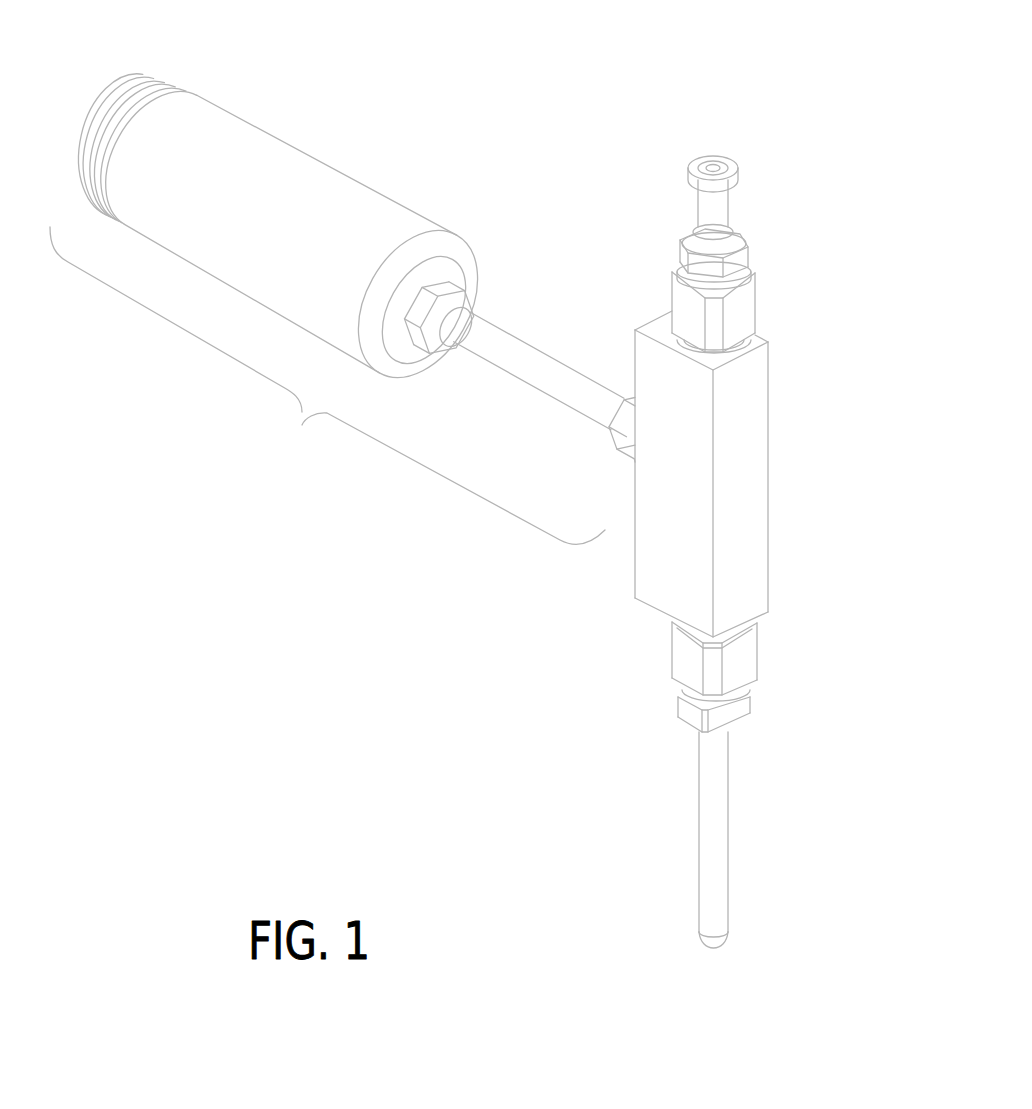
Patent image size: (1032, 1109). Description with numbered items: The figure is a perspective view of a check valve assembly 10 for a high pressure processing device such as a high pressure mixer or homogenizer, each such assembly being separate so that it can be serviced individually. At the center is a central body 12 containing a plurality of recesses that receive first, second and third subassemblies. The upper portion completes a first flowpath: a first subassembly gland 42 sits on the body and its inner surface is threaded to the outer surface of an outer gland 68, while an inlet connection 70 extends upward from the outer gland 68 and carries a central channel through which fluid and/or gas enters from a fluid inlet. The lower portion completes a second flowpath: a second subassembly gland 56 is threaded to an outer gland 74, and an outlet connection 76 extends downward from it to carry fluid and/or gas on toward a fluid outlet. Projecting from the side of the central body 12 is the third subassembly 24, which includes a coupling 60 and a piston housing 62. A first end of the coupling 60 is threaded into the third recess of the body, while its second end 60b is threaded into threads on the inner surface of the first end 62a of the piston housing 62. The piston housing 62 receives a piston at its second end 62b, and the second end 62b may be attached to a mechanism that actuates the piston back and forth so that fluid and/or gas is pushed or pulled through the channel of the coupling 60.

The check valve assembly 10 is at (860, 320).
The central body 12 is at (748, 474).
The third subassembly 24 is at (302, 410).
The first subassembly gland 42 is at (745, 312).
The second subassembly gland 56 is at (745, 653).
The coupling 60 is at (552, 375).
The second end of coupling 60b is at (462, 365).
The piston housing 62 is at (282, 165).
The first end of piston housing 62a is at (452, 271).
The second end of piston housing 62b is at (100, 97).
The outer gland 68 is at (742, 257).
The inlet connection 70 is at (717, 203).
The outer gland 74 is at (750, 708).
The outlet connection 76 is at (715, 818).